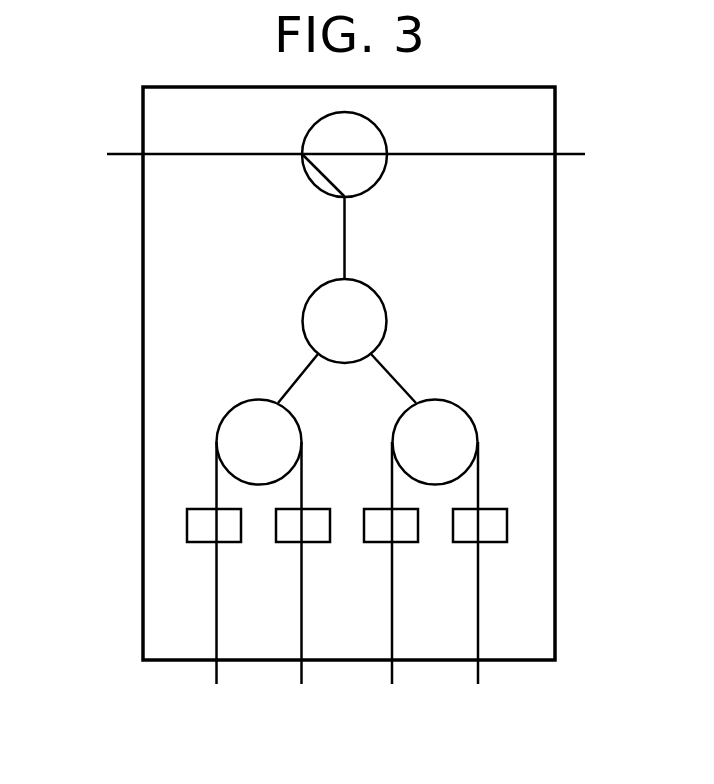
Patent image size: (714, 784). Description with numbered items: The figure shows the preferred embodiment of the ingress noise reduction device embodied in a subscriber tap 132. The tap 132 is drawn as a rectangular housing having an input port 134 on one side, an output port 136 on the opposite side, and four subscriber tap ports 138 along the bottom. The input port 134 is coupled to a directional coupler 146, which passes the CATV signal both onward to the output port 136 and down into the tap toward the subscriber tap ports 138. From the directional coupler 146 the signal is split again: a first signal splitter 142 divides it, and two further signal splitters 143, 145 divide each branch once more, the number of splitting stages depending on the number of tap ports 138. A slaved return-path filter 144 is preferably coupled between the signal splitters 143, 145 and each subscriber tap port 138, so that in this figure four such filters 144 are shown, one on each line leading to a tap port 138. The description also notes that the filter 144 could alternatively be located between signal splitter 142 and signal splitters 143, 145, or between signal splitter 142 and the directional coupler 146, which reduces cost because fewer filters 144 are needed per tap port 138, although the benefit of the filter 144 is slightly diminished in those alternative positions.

The subscriber tap 132 is at (232, 129).
The input port 134 is at (112, 150).
The output port 136 is at (580, 152).
The subscriber tap ports 138 is at (477, 678).
The signal splitter 142 is at (362, 297).
The signal splitter 143 is at (254, 410).
The slaved return-path filter 144 is at (282, 543).
The signal splitter 145 is at (432, 410).
The directional coupler 146 is at (379, 128).